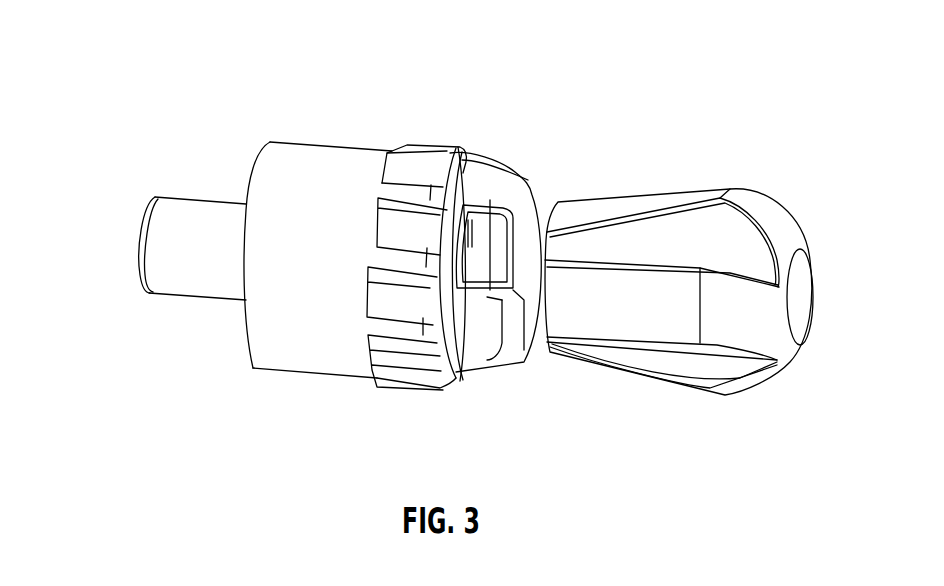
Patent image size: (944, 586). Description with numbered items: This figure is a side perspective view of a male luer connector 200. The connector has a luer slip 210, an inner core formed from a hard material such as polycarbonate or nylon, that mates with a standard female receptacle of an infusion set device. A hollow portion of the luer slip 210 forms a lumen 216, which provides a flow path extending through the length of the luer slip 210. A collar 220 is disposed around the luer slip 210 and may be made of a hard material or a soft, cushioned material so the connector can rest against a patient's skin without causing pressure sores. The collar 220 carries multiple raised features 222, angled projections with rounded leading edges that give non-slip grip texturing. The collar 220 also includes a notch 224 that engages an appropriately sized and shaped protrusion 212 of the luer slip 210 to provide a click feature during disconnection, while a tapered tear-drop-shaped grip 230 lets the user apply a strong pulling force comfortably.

The male luer connector 200 is at (131, 39).
The luer slip 210 is at (172, 197).
The protrusion 212 is at (512, 270).
The lumen 216 is at (140, 244).
The collar 220 is at (331, 158).
The raised features 222 is at (398, 293).
The notch 224 is at (482, 202).
The grip 230 is at (777, 216).